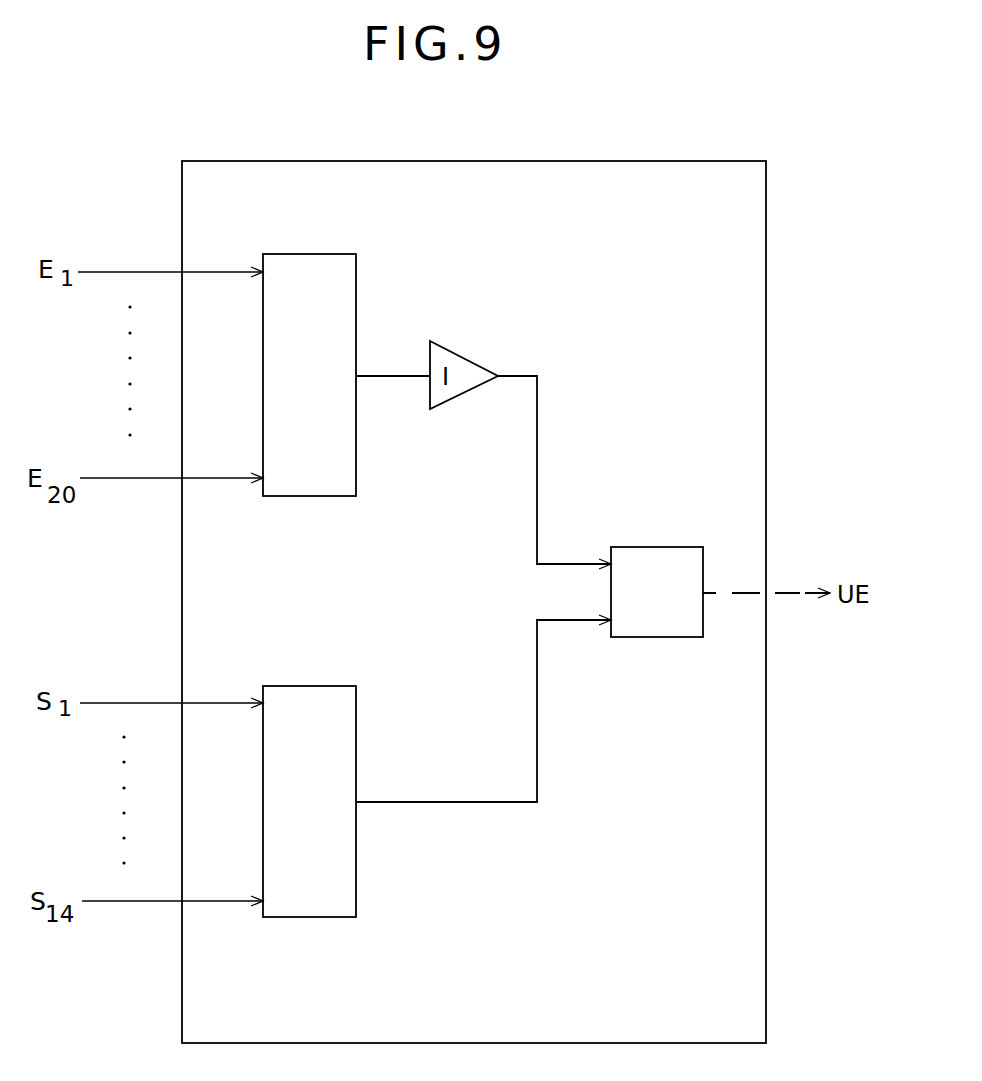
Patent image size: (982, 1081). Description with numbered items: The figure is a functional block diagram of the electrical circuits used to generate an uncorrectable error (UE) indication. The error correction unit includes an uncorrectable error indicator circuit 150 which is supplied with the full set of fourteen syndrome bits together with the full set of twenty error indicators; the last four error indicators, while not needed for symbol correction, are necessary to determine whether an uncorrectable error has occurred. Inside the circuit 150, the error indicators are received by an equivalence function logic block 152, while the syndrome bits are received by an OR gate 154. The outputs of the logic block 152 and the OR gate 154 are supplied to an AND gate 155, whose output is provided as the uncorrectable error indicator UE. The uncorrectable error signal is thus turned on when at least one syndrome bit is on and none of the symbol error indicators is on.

The uncorrectable error indicator circuit 150 is at (658, 161).
The equivalence function logic block 152 is at (310, 254).
The OR gate 154 is at (312, 686).
The AND gate 155 is at (653, 547).